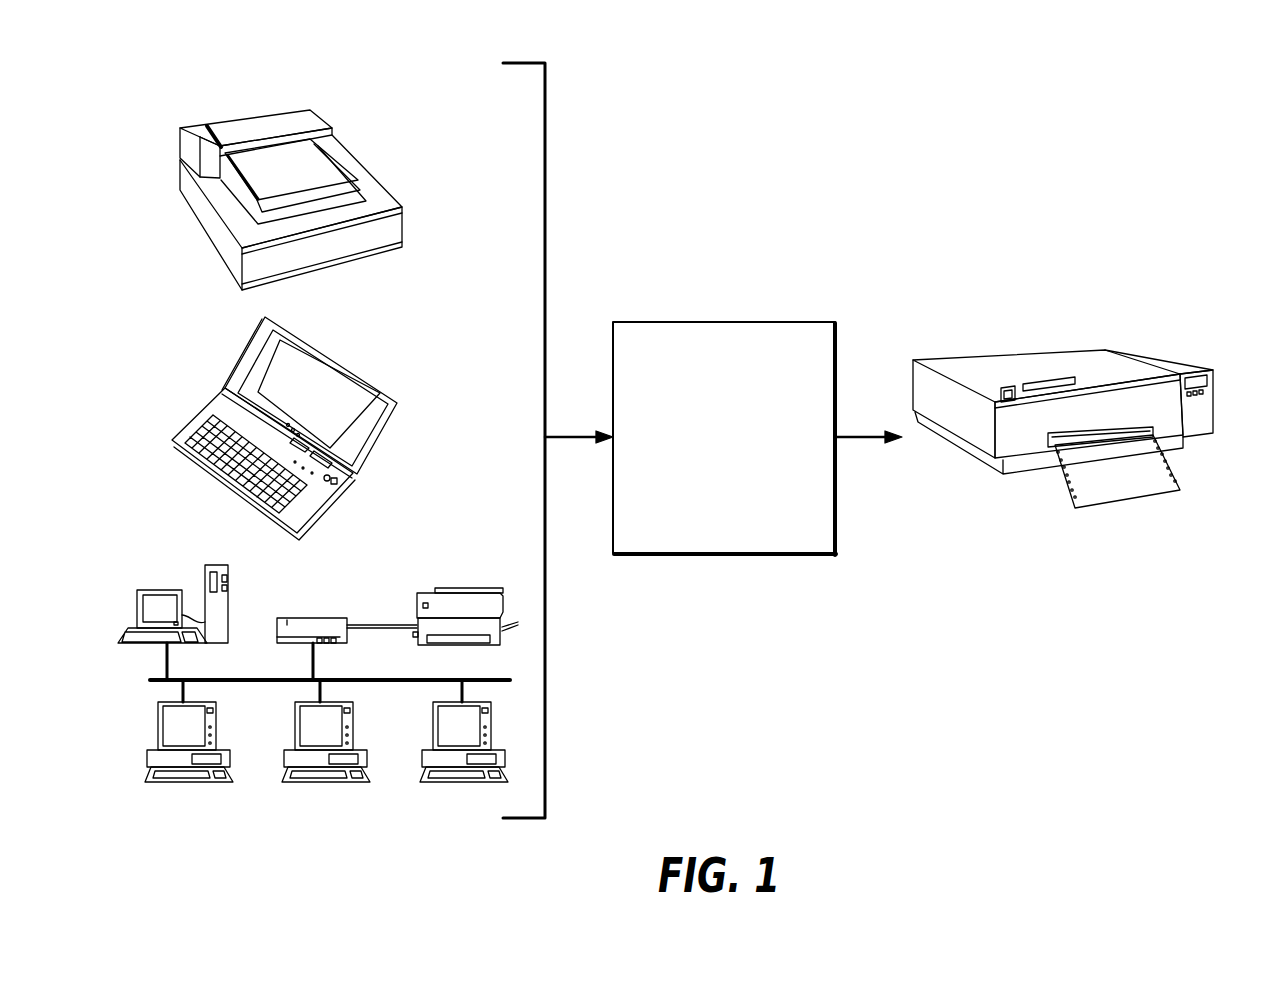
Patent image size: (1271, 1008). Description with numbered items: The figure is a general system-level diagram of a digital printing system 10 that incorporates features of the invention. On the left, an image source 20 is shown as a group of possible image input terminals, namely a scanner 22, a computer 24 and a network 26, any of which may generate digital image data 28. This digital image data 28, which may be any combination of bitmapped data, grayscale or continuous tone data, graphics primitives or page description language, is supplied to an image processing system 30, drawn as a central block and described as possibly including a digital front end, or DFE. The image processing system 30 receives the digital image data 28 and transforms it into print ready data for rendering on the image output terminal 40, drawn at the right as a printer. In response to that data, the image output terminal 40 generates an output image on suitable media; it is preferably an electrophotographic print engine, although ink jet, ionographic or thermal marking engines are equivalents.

The digital printing system 10 is at (787, 163).
The image source 20 is at (510, 446).
The scanner 22 is at (365, 258).
The computer 24 is at (358, 370).
The network 26 is at (303, 801).
The digital image data 28 is at (571, 430).
The image processing system 30 is at (717, 557).
The image output terminal 40 is at (1030, 472).